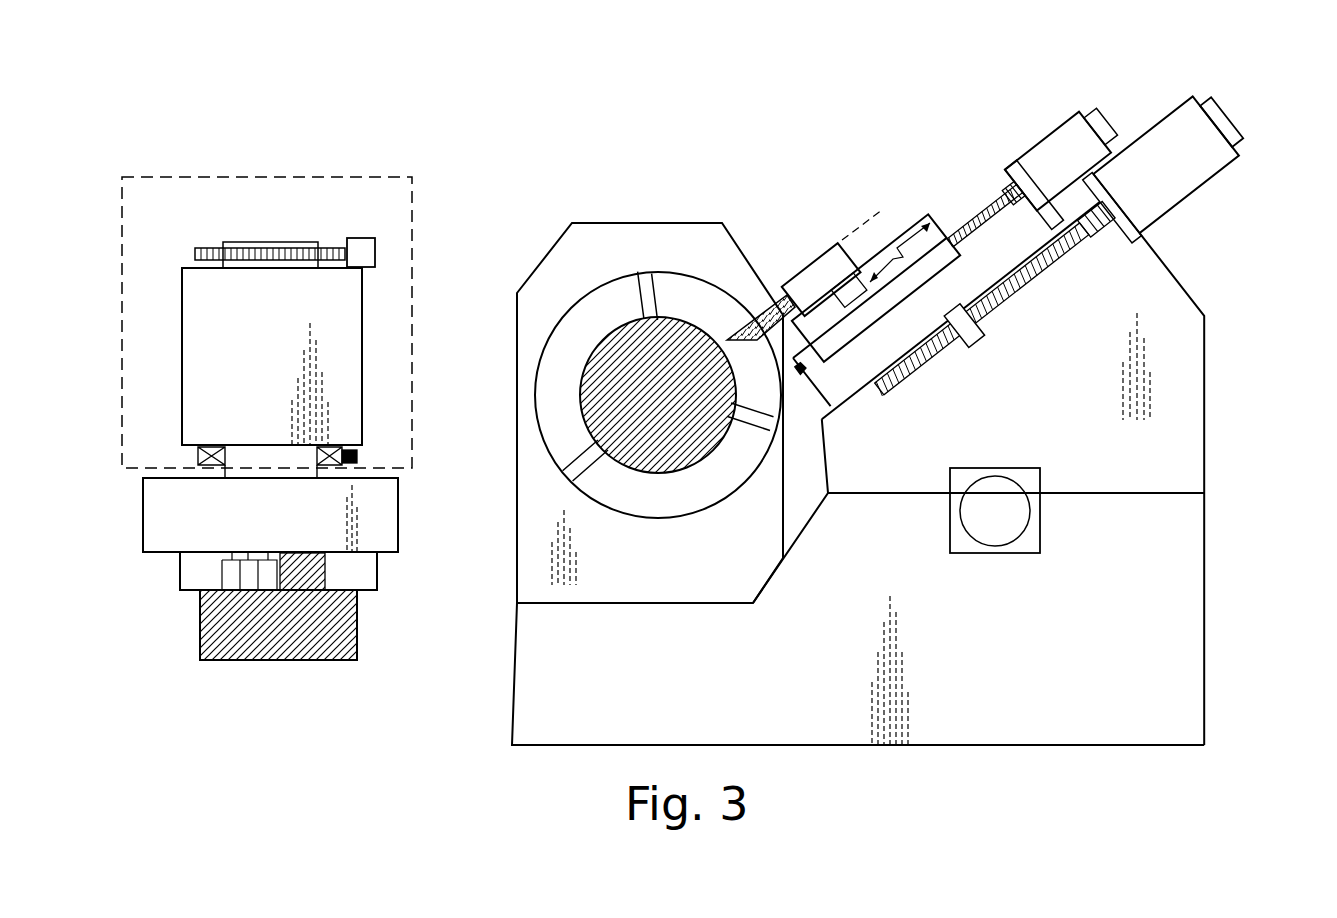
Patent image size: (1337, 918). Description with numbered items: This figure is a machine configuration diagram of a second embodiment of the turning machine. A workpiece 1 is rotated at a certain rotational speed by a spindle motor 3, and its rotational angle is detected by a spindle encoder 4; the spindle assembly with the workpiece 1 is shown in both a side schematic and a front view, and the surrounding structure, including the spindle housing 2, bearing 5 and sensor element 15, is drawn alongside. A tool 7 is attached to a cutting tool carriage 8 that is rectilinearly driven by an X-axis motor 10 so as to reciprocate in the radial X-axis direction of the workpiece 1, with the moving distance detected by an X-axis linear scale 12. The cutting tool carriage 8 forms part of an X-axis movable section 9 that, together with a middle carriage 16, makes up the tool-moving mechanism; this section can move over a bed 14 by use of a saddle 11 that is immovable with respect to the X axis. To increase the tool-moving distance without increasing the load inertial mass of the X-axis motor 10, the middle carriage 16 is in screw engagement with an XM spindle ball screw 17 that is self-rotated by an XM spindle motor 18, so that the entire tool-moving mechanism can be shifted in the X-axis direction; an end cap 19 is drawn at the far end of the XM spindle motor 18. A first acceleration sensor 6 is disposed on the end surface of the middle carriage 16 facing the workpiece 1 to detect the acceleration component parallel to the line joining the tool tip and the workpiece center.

The workpiece 1 is at (215, 638).
The spindle housing 2 is at (160, 510).
The spindle motor 3 is at (210, 340).
The spindle encoder 4 is at (360, 240).
The bearing 5 is at (203, 450).
The first acceleration sensor 6 is at (799, 374).
The tool 7 is at (750, 318).
The cutting tool carriage 8 is at (815, 266).
The X-axis movable section 9 is at (886, 240).
The X-axis motor 10 is at (1055, 152).
The saddle 11 is at (978, 473).
The X-axis linear scale 12 is at (856, 337).
The bed 14 is at (858, 670).
The sensor 15 is at (358, 455).
The middle carriage 16 is at (986, 219).
The XM spindle ball screw 17 is at (1031, 291).
The XM spindle motor 18 is at (1178, 188).
The encoder 19 is at (1226, 118).